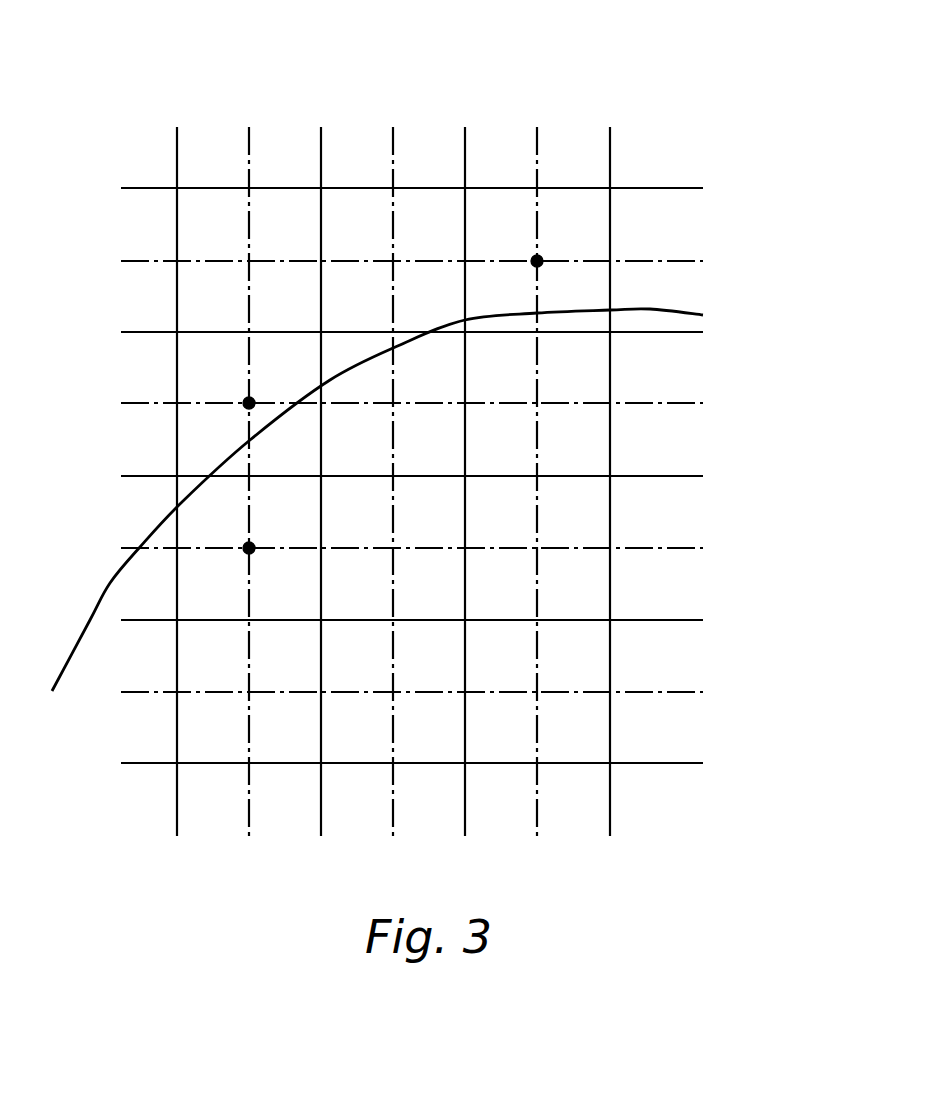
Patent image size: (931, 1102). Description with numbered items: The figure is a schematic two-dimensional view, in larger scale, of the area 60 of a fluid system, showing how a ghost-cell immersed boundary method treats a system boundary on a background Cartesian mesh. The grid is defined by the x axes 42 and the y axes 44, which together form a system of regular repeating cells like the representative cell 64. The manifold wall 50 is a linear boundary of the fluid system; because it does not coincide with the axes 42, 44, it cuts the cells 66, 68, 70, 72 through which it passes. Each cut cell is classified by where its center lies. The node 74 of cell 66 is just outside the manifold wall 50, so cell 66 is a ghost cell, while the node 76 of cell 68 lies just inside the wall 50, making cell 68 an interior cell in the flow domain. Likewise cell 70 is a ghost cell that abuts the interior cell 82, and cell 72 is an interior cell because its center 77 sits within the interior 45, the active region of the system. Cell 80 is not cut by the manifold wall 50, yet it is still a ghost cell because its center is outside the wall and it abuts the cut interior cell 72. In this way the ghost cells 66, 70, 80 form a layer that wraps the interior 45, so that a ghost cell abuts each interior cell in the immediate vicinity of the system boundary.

The x axes 42 is at (673, 187).
The y axes 44 is at (177, 806).
The interior 45 is at (245, 67).
The manifold wall 50 is at (111, 585).
The area 60 is at (750, 448).
The representative cell 64 is at (225, 213).
The ghost cell 66 is at (186, 486).
The interior cell 68 is at (205, 368).
The ghost cell 70 is at (352, 348).
The interior cell 72 is at (588, 215).
The node 74 is at (249, 548).
The node 76 is at (249, 405).
The cell center 77 is at (537, 261).
The ghost cell 80 is at (570, 443).
The interior cell 82 is at (432, 214).